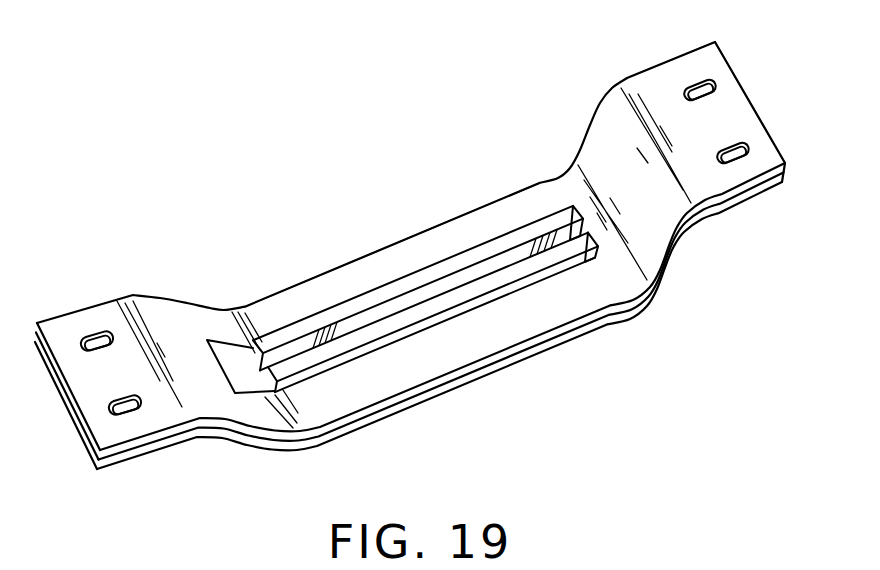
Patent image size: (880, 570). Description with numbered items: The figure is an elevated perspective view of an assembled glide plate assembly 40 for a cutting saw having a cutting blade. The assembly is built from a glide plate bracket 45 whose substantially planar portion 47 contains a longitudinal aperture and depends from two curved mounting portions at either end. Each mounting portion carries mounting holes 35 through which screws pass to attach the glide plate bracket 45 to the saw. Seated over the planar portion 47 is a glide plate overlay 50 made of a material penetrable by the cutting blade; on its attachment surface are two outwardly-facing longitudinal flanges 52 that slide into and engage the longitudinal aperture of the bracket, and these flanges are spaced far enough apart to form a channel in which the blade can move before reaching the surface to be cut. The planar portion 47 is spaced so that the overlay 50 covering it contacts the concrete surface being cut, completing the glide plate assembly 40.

The glide plate assembly 40 is at (427, 237).
The glide plate bracket 45 is at (651, 83).
The substantially planar portion 47 is at (327, 287).
The glide plate overlay 50 is at (458, 386).
The outwardly-facing longitudinal flanges 52 is at (482, 250).
The mounting holes 35 is at (708, 88).